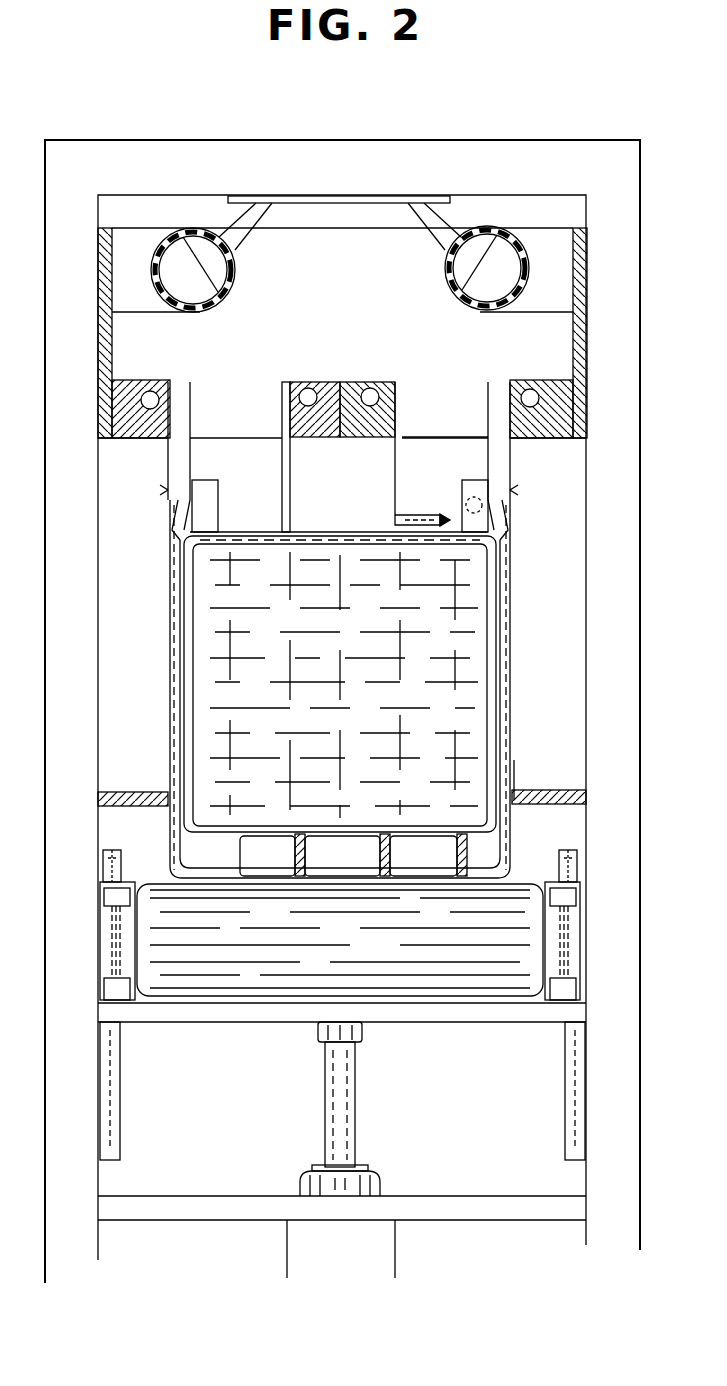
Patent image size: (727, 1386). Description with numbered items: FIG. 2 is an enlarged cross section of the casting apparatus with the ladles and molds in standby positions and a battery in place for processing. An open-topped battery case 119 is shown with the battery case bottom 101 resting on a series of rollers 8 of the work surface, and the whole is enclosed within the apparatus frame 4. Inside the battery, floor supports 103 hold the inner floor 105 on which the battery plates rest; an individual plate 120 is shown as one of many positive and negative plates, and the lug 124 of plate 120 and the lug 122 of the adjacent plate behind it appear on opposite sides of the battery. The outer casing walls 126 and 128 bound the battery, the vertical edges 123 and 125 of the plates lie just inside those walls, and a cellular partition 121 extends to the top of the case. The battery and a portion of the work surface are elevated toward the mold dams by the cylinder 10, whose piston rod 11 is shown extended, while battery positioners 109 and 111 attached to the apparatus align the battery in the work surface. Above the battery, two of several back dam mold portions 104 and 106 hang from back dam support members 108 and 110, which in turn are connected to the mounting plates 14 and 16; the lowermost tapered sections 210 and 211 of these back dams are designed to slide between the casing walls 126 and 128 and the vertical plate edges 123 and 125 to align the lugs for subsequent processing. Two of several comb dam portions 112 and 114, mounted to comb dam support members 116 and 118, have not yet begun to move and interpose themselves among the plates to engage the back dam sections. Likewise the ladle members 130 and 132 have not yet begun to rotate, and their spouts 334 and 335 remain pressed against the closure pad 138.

The seismic isolation apparatus housing 4 is at (165, 152).
The rollers 8 is at (340, 940).
The cylinder 10 is at (373, 1253).
The piston rod 11 is at (345, 1084).
The mounting plate 14 is at (112, 345).
The mounting plate 16 is at (573, 335).
The battery case bottom 101 is at (447, 873).
The floor supports 103 is at (302, 862).
The back dam mold portion 104 is at (178, 457).
The inner floor 105 is at (272, 840).
The back dam mold portion 106 is at (503, 473).
The back dam support member 108 is at (128, 386).
The battery positioner 109 is at (150, 765).
The back dam support member 110 is at (553, 384).
The battery positioner 111 is at (540, 809).
The comb dam portion 112 is at (283, 398).
The comb dam portion 114 is at (400, 418).
The comb dam support member 116 is at (328, 392).
The comb dam support member 118 is at (348, 388).
The battery case 119 is at (515, 775).
The plate 120 is at (455, 742).
The cellular partition 121 is at (440, 437).
The lug 122 is at (207, 497).
The vertical edge of battery plates 123 is at (177, 597).
The lug 124 is at (468, 492).
The vertical edge of battery plates 125 is at (500, 568).
The outer casing wall 126 is at (167, 732).
The outer casing wall 128 is at (518, 688).
The ladle member 130 is at (224, 308).
The ladle member 132 is at (458, 302).
The closure pad 138 is at (372, 200).
The tapered section 210 is at (170, 538).
The tapered section 211 is at (513, 525).
The spout 334 is at (240, 232).
The spout 335 is at (440, 230).